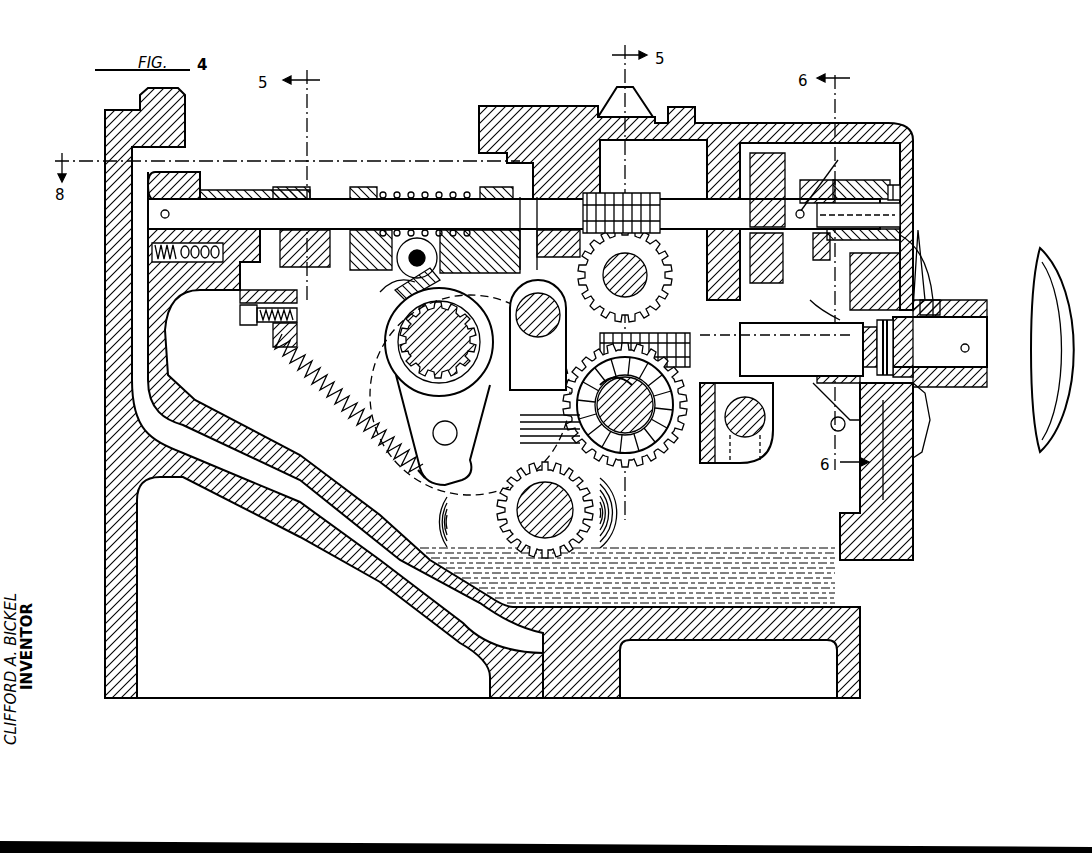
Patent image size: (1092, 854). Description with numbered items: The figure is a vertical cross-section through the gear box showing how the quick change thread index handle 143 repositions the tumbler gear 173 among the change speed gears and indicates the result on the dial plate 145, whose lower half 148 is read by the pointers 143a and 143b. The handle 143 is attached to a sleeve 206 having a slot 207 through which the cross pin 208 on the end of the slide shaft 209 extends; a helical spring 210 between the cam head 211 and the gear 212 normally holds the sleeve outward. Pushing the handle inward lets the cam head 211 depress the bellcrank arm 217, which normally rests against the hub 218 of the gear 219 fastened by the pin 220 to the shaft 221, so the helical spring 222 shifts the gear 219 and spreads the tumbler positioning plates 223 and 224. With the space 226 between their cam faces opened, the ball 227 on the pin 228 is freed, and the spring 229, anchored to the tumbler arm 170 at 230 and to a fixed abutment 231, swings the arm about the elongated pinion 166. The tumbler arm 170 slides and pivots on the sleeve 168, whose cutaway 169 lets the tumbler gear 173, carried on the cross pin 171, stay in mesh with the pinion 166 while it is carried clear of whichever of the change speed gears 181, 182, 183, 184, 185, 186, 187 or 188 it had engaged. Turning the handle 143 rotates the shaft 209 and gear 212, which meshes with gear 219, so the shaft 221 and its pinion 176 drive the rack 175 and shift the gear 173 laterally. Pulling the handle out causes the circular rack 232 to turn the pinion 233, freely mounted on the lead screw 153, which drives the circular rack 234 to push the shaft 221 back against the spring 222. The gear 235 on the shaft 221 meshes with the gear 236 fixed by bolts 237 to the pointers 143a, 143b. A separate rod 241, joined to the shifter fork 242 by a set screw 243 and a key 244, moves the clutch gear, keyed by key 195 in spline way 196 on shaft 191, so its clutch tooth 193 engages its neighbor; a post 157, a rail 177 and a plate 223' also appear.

The quick change thread index handle 143 is at (1036, 270).
The pointer 143a is at (922, 262).
The pointer 143b is at (925, 445).
The dial plate 145 is at (910, 172).
The lower half of the dial 148 is at (905, 528).
The lead screw 153 is at (616, 238).
The post 157 is at (556, 338).
The elongated pinion 166 is at (410, 335).
The sleeve 168 is at (404, 320).
The cutaway portion 169 is at (405, 352).
The tumbler arm 170 is at (452, 420).
The cross pin 171 is at (452, 430).
The tumbler gear 173 is at (490, 462).
The rack 175 is at (258, 325).
The pinion 176 is at (238, 188).
The slide rail 177 is at (350, 214).
The change speed gear 181 is at (490, 515).
The change speed gear 182 is at (612, 487).
The change speed gear 183 is at (615, 495).
The change speed gear 184 is at (618, 503).
The change speed gear 185 is at (620, 512).
The change speed gear 186 is at (625, 520).
The change speed gear 187 is at (628, 528).
The change speed gear 188 is at (635, 542).
The shaft 191 is at (600, 385).
The clutch tooth 193 is at (595, 398).
The key 195 is at (648, 385).
The spline way 196 is at (660, 412).
The sleeve 206 is at (965, 318).
The slot 207 is at (915, 338).
The cross pin 208 is at (880, 352).
The slide shaft 209 is at (785, 354).
The helical spring 210 is at (815, 372).
The cam head 211 is at (842, 276).
The gear 212 is at (775, 298).
The arm 217 is at (825, 226).
The hub 218 is at (800, 185).
The gear 219 is at (785, 166).
The pin 220 is at (831, 185).
The shaft 221 is at (692, 200).
The helical spring 222 is at (480, 235).
The tumbler positioning plate 223 is at (431, 205).
The ball bearing 223' is at (400, 284).
The tumbler positioning plate 224 is at (430, 239).
The space 226 is at (414, 238).
The ball 227 is at (428, 245).
The pin 228 is at (392, 300).
The spring 229 is at (340, 405).
The anchor point 230 is at (440, 478).
The fixed abutment 231 is at (283, 345).
The circular rack 232 is at (690, 345).
The pinion 233 is at (672, 262).
The circular rack 234 is at (640, 200).
The gear 235 is at (912, 190).
The gear 236 is at (910, 258).
The bolts 237 is at (945, 308).
The rod 241 is at (770, 432).
The shifter fork 242 is at (700, 458).
The set screw 243 is at (758, 466).
The key 244 is at (745, 463).